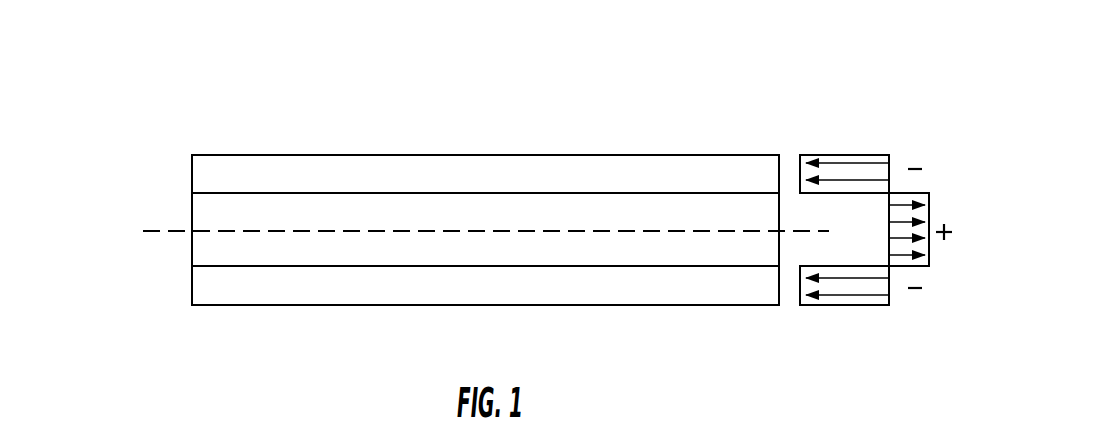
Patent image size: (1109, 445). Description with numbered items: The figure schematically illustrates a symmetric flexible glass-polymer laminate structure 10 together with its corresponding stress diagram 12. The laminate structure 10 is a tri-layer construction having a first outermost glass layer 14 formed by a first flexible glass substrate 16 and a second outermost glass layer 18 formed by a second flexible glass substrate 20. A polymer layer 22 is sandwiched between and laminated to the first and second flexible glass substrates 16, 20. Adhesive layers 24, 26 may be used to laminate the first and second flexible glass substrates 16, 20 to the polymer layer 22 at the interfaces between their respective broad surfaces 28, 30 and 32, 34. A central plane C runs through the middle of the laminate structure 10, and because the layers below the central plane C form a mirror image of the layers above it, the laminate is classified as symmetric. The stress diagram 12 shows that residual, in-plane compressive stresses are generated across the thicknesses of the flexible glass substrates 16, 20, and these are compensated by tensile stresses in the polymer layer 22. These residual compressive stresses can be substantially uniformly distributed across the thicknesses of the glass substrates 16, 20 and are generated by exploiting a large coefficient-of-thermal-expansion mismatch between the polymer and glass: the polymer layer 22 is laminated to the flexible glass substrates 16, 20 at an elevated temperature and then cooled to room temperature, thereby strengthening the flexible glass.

The flexible glass-polymer laminate structure 10 is at (752, 56).
The stress diagram 12 is at (847, 118).
The first outermost glass layer 14 is at (173, 161).
The first flexible glass substrate 16 is at (625, 172).
The second outermost glass layer 18 is at (182, 288).
The second flexible glass substrate 20 is at (257, 287).
The polymer layer 22 is at (125, 232).
The adhesive layer 24 is at (325, 193).
The adhesive layer 26 is at (605, 266).
The broad surface 28 is at (280, 193).
The broad surface 30 is at (237, 193).
The broad surface 32 is at (673, 266).
The broad surface 34 is at (703, 266).
The central plane C is at (303, 231).